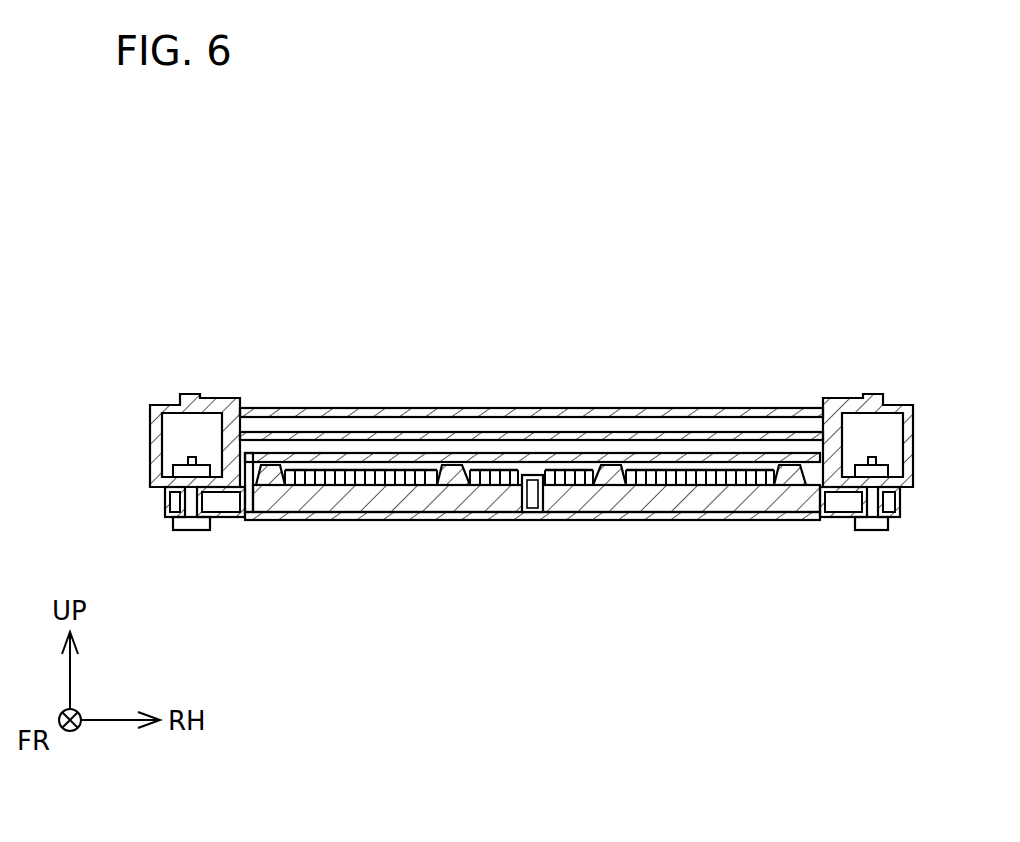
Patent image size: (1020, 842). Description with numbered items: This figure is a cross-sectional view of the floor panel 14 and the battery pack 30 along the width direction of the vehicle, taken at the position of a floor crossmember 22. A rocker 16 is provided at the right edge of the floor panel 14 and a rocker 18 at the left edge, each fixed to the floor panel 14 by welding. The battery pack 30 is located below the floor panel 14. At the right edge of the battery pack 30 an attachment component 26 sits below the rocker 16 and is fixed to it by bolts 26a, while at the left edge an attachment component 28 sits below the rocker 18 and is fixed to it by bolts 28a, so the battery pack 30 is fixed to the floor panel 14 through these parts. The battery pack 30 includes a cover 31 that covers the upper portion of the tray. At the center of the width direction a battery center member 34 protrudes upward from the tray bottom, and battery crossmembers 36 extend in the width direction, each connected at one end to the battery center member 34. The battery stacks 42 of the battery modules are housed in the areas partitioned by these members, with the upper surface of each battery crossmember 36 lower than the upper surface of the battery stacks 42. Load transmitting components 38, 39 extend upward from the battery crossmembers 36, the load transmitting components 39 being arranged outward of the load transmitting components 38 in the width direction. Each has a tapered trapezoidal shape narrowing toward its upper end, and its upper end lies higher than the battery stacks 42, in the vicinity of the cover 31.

The floor panel 14 is at (449, 437).
The rocker 16 is at (855, 409).
The rocker 18 is at (208, 407).
The floor crossmember 22 is at (650, 412).
The attachment component 26 is at (838, 519).
The bolts 26a is at (882, 527).
The attachment component 28 is at (231, 519).
The bolts 28a is at (188, 525).
The battery pack 30 is at (540, 560).
The cover 31 is at (345, 458).
The battery center member 34 is at (533, 476).
The battery crossmember 36 is at (410, 505).
The load transmitting component 38 is at (453, 482).
The load transmitting component 39 is at (283, 483).
The battery stack 42 is at (355, 488).